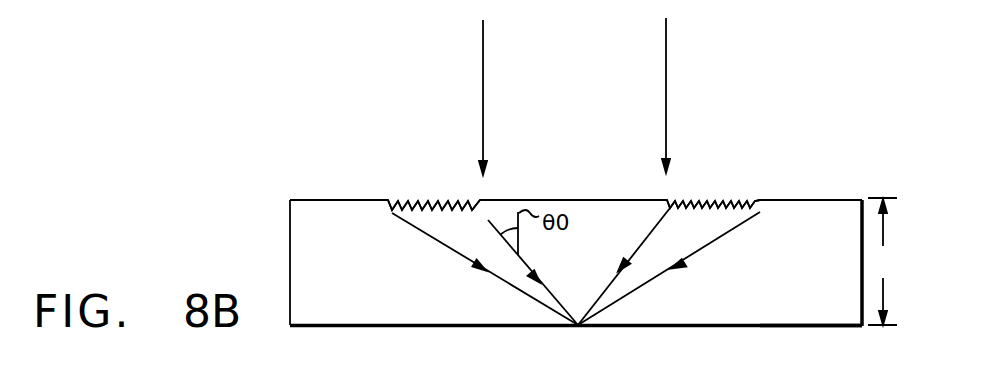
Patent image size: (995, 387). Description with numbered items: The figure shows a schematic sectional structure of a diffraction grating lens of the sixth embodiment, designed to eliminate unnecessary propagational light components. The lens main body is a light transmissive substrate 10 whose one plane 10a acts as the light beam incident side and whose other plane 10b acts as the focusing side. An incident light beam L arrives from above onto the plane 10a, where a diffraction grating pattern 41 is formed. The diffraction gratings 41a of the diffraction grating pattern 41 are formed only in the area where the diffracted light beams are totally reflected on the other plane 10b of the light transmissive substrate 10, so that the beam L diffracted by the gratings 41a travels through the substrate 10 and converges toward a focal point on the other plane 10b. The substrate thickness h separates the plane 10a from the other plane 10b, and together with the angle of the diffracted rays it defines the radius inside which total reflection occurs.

The light transmissive substrate 10 is at (793, 212).
The plane 10a is at (830, 199).
The other plane 10b is at (828, 325).
The diffraction grating pattern 41 is at (737, 194).
The diffraction gratings 41a is at (711, 199).
The incident light beam L is at (666, 48).
The substrate thickness h is at (882, 261).